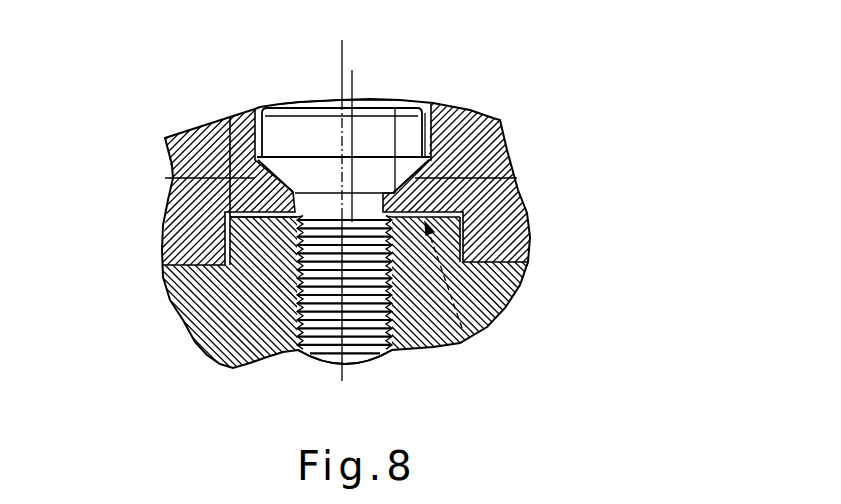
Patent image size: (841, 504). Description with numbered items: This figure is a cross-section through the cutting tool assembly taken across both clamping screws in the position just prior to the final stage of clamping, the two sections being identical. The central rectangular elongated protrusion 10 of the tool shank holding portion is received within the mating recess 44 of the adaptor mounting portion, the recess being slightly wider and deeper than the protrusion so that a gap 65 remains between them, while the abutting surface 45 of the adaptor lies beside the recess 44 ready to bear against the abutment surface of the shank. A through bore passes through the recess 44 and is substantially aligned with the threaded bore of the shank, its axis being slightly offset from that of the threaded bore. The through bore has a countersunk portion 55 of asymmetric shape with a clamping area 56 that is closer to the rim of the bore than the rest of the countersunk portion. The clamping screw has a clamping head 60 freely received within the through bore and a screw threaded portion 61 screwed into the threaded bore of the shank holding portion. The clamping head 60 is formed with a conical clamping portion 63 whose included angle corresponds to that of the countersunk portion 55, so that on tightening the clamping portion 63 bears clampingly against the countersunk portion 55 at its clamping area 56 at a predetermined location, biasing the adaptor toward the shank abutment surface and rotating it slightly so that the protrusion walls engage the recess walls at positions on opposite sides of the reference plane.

The protrusion 10 is at (472, 335).
The abutting surface 45 is at (230, 117).
The gap 65 is at (255, 178).
The countersunk portion 55 is at (490, 180).
The clamping area 56 is at (287, 185).
The conical clamping portion 63 is at (397, 108).
The clamping head 60 is at (411, 139).
The recess 44 is at (270, 222).
The screw threaded portion 61 is at (360, 315).